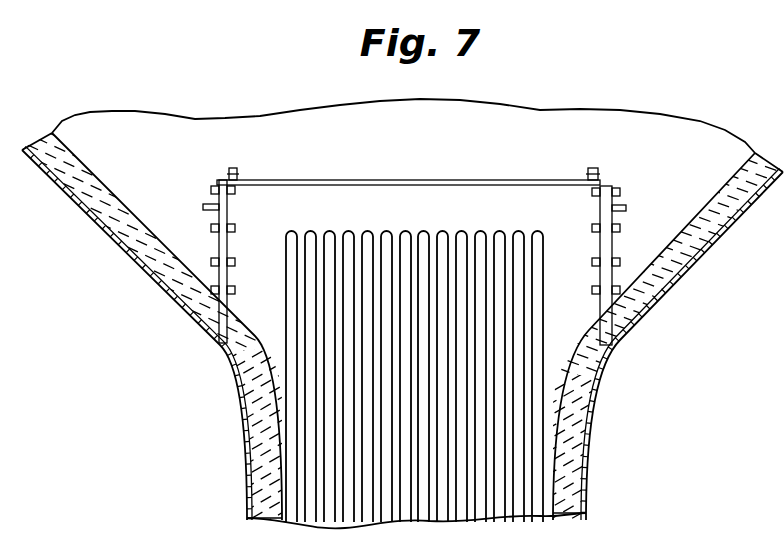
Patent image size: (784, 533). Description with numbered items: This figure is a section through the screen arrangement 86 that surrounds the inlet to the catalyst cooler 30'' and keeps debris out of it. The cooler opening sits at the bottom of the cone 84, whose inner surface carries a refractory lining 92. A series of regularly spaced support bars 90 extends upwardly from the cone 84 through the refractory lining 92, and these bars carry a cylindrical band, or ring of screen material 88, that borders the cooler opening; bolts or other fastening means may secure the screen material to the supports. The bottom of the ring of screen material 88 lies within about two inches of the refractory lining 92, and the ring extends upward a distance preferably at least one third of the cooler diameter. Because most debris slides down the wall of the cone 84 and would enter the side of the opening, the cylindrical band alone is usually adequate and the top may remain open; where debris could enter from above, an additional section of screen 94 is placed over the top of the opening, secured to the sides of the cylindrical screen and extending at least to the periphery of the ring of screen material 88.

The screen arrangement 86 is at (604, 143).
The section of screen 94 is at (480, 180).
The ring of screen material 88 is at (229, 200).
The support bars 90 is at (627, 208).
The refractory lining 92 is at (669, 244).
The cone 84 is at (672, 291).
The catalyst cooler 30'' is at (447, 482).